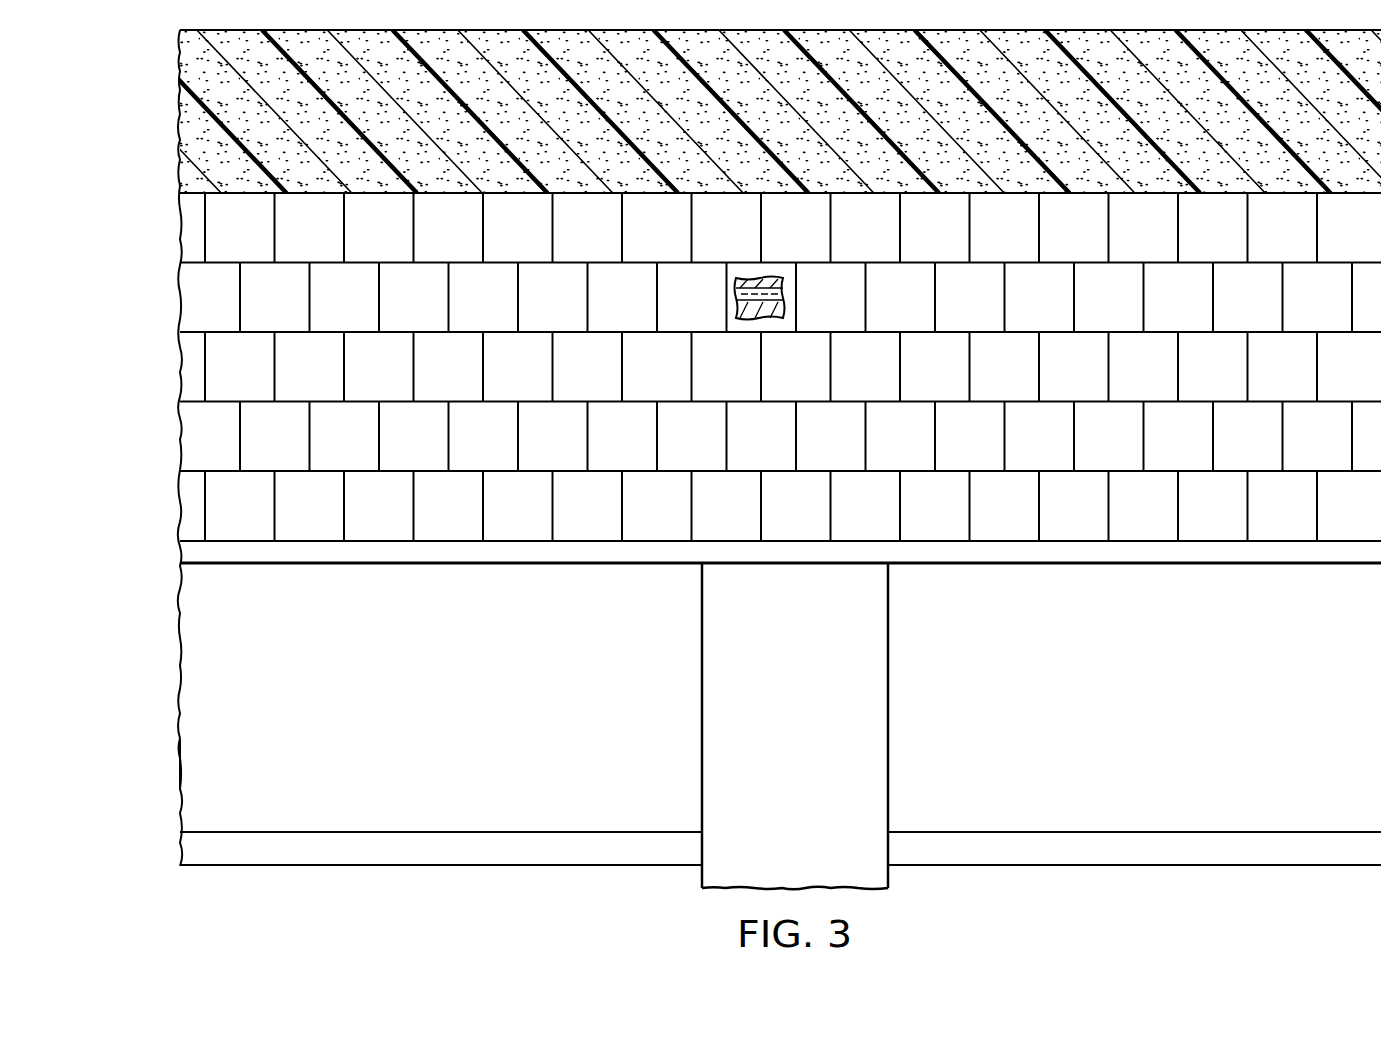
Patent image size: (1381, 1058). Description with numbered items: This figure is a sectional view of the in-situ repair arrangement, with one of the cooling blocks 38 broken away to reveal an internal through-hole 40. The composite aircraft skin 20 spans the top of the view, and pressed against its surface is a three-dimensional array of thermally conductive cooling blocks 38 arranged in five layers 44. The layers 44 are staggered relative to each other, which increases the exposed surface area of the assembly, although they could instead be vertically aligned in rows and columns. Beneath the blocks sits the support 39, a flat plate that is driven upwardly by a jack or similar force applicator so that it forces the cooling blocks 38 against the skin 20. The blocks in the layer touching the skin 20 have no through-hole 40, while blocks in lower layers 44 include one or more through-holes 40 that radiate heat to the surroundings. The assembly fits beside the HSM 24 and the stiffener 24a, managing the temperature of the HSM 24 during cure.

The composite aircraft skin 20 is at (180, 112).
The cooling blocks 38 is at (254, 242).
The layers 44 is at (180, 297).
The through-hole 40 is at (800, 296).
The support 39 is at (809, 740).
The HSM 24 is at (180, 697).
The stiffener 24a is at (148, 764).